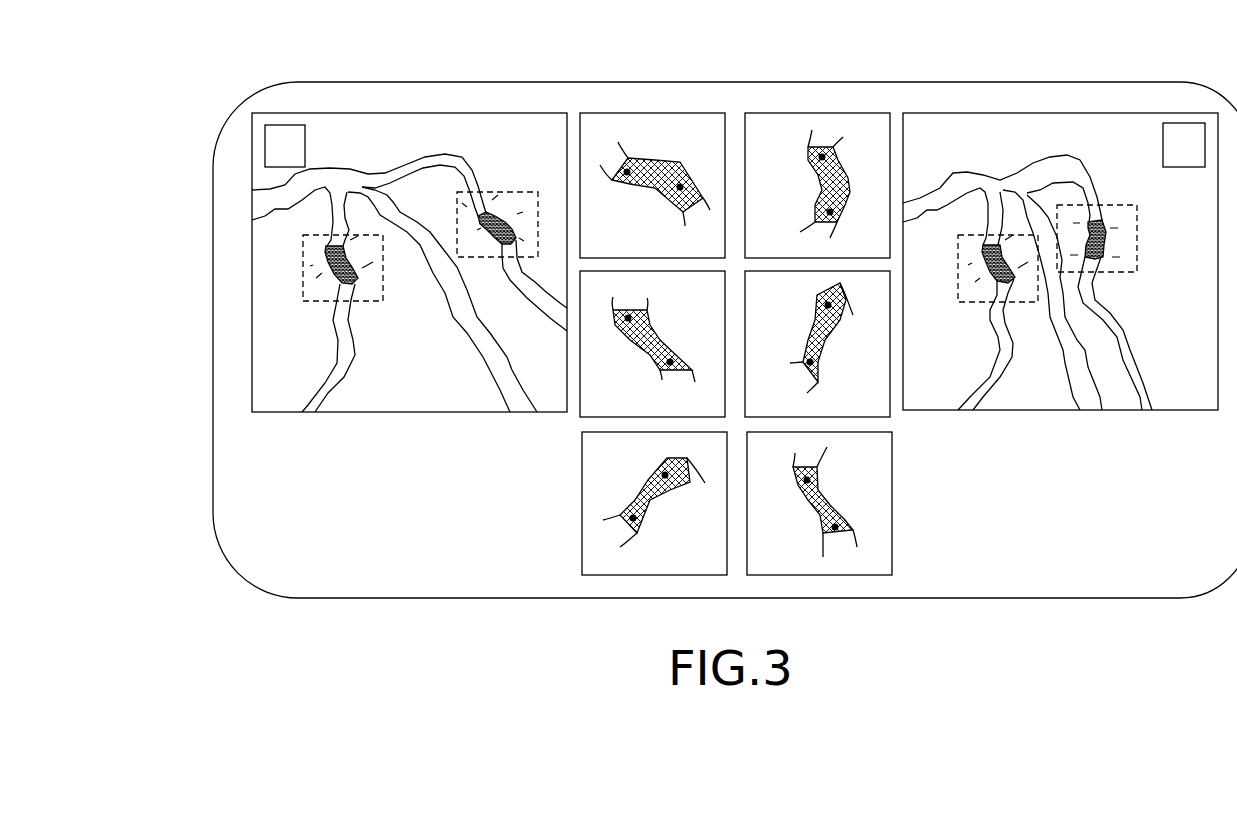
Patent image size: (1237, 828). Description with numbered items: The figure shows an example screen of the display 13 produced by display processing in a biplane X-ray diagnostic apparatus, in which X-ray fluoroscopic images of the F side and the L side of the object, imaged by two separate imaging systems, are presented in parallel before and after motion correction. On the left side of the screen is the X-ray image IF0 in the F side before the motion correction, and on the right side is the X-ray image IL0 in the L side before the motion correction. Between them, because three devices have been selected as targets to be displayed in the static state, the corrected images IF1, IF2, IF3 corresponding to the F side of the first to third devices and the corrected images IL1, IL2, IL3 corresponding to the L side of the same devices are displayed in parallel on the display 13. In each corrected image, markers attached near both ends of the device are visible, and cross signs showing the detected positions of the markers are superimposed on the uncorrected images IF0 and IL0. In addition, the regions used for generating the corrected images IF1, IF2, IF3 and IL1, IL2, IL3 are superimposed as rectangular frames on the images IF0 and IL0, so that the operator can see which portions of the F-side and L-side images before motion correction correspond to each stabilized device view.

The display 13 is at (212, 468).
The X-ray image in the F side before the motion correction IF0 is at (292, 413).
The corrected image IF1 is at (632, 112).
The corrected image IF2 is at (580, 404).
The corrected image IF3 is at (580, 512).
The X-ray image in the L side before the motion correction IL0 is at (1167, 411).
The corrected image IL1 is at (793, 112).
The corrected image IL2 is at (893, 404).
The corrected image IL3 is at (893, 512).